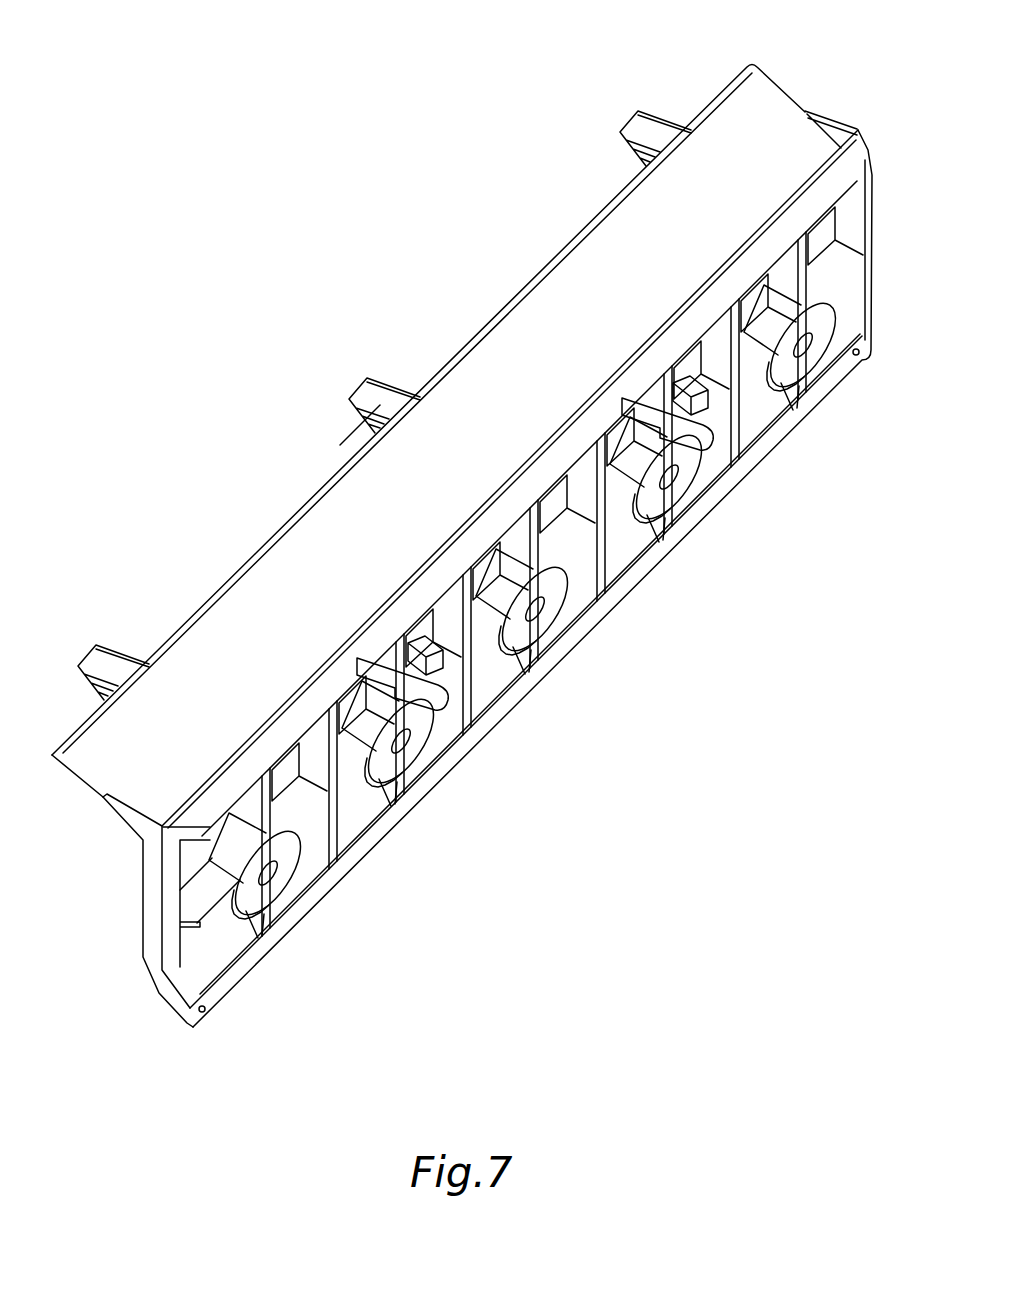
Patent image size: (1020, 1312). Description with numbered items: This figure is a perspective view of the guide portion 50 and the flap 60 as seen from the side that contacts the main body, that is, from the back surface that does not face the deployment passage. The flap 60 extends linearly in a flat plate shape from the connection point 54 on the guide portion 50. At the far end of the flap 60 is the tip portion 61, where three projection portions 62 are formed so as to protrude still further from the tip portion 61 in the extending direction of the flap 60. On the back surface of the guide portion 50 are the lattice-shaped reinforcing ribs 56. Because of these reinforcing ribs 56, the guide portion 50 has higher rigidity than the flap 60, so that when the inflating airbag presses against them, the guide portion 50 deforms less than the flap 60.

The guide portion 50 is at (485, 788).
The connection point 54 is at (665, 318).
The reinforcing ribs 56 is at (794, 392).
The flap 60 is at (446, 268).
The tip portion 61 is at (360, 425).
The projection portions 62 is at (650, 102).